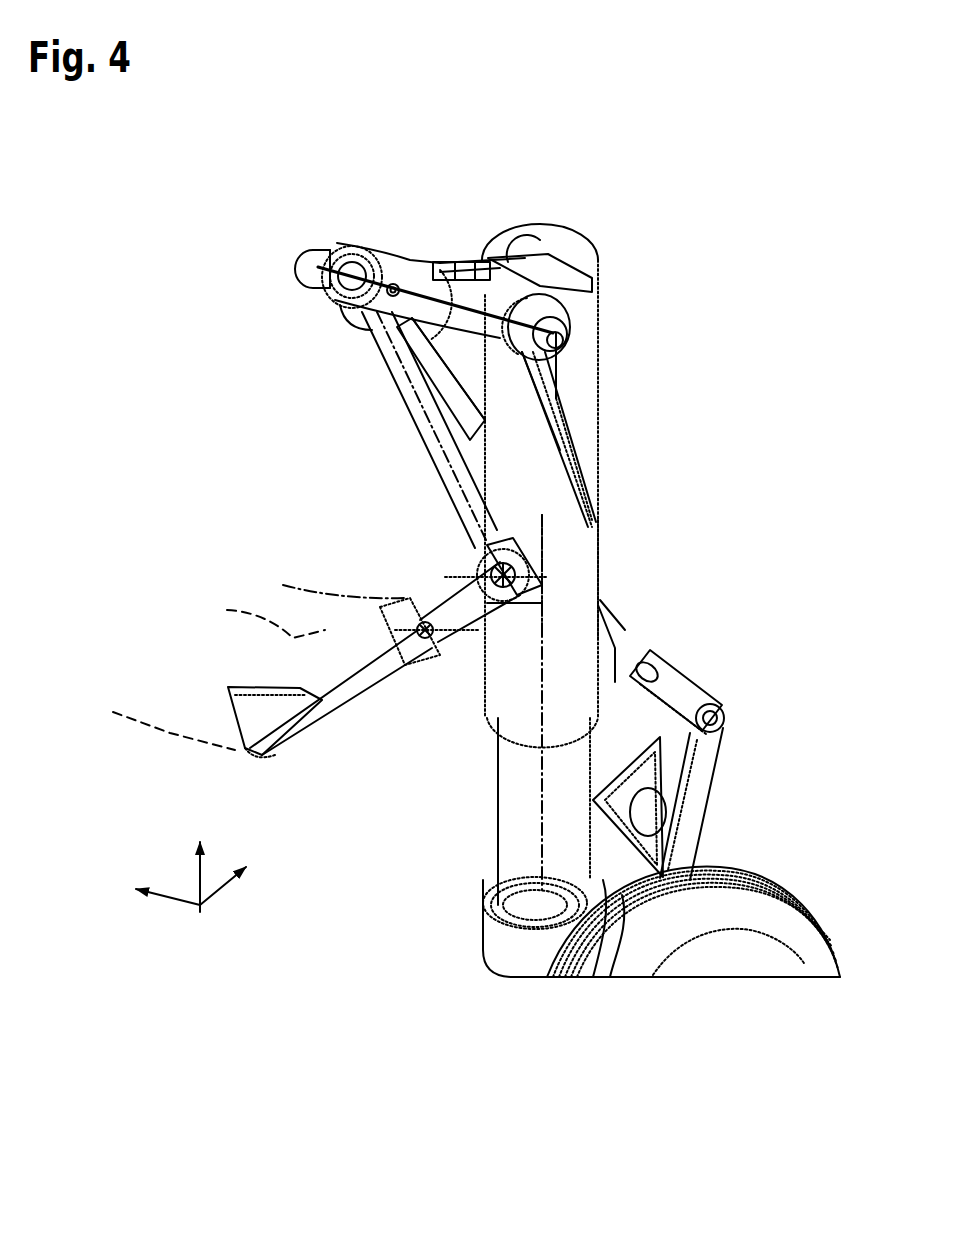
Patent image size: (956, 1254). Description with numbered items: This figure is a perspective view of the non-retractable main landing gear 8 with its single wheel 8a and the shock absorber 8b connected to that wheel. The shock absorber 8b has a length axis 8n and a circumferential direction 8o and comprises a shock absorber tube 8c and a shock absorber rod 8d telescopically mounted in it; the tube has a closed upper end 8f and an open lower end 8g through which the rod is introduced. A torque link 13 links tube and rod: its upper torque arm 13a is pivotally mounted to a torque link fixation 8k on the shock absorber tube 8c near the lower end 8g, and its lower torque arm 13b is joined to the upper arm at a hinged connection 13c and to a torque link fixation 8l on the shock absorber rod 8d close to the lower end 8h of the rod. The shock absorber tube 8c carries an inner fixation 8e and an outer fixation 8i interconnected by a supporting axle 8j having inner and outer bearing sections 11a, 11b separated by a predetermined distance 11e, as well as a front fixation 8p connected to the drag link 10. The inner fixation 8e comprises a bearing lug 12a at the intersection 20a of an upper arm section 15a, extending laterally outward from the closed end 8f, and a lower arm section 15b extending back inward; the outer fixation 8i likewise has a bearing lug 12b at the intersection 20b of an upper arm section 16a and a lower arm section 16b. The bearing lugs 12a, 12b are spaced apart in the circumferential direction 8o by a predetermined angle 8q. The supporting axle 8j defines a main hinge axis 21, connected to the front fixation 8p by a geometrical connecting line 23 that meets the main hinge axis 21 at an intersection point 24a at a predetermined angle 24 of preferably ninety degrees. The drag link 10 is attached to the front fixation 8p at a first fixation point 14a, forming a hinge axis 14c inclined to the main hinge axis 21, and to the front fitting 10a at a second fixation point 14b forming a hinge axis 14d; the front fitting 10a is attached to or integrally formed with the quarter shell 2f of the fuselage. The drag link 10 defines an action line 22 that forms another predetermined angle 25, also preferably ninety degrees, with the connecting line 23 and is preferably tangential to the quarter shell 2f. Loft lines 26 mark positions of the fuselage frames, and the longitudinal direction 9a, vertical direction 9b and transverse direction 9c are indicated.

The quarter shell 2f is at (267, 757).
The main landing gear 8 is at (660, 287).
The single wheel 8a is at (730, 923).
The shock absorber 8b is at (613, 437).
The shock absorber tube 8c is at (570, 377).
The shock absorber rod 8d is at (540, 857).
The inner fixation 8e is at (403, 415).
The closed end 8f is at (550, 243).
The open end 8g is at (517, 840).
The lower end of the shock absorber rod 8h is at (493, 972).
The outer fixation 8i is at (537, 397).
The supporting axle 8j is at (465, 297).
The torque link fixation 8k is at (613, 680).
The torque link fixation 8l is at (607, 900).
The length axis 8n is at (507, 910).
The circumferential direction 8o is at (545, 565).
The front fixation 8p is at (527, 740).
The predetermined angle 8q is at (508, 243).
The longitudinal direction 9a is at (220, 893).
The vertical direction 9b is at (198, 873).
The transverse direction 9c is at (167, 898).
The drag link 10 is at (427, 593).
The front fitting 10a is at (293, 687).
The inner bearing section 11a is at (292, 263).
The outer bearing section 11b is at (572, 348).
The predetermined distance 11e is at (420, 265).
The bearing lug 12a is at (348, 296).
The bearing lug 12b is at (537, 317).
The torque link 13 is at (742, 688).
The upper torque arm 13a is at (680, 693).
The lower torque arm 13b is at (687, 810).
The hinged connection 13c is at (722, 727).
The first fixation point 14a is at (527, 560).
The second fixation point 14b is at (437, 640).
The hinge axis 14c is at (530, 582).
The hinge axis 14d is at (457, 637).
The upper arm section 15a is at (425, 273).
The lower arm section 15b is at (420, 445).
The upper arm section 16a is at (528, 292).
The lower arm section 16b is at (543, 443).
The intersection 20a is at (352, 265).
The intersection 20b is at (505, 290).
The main hinge axis 21 is at (413, 248).
The action line 22 is at (324, 582).
The geometrical connecting line 23 is at (460, 503).
The predetermined angle 24 is at (407, 377).
The intersection point 24a is at (387, 300).
The predetermined angle 25 is at (460, 570).
The loft lines 26 is at (199, 671).